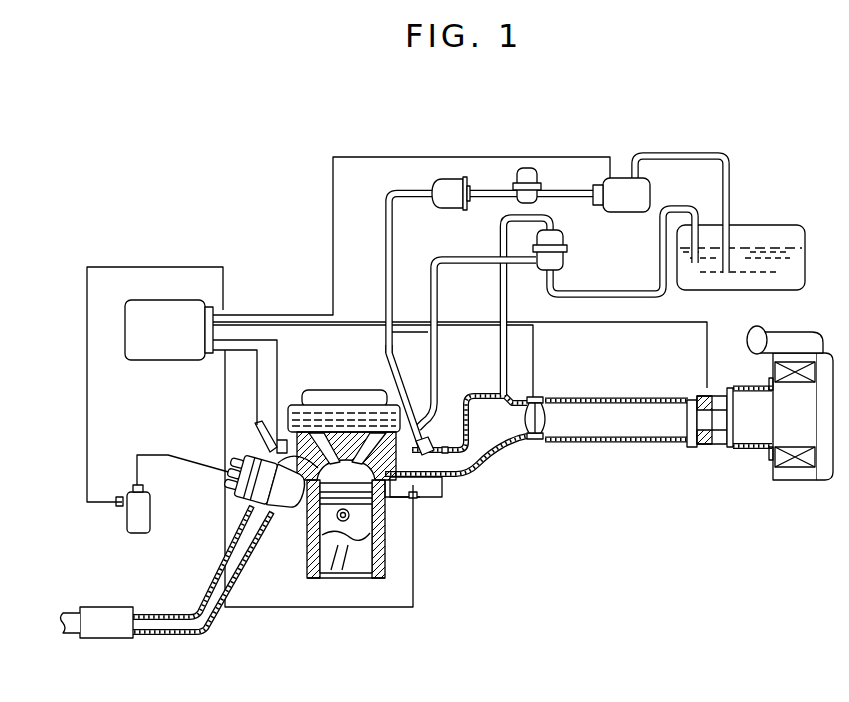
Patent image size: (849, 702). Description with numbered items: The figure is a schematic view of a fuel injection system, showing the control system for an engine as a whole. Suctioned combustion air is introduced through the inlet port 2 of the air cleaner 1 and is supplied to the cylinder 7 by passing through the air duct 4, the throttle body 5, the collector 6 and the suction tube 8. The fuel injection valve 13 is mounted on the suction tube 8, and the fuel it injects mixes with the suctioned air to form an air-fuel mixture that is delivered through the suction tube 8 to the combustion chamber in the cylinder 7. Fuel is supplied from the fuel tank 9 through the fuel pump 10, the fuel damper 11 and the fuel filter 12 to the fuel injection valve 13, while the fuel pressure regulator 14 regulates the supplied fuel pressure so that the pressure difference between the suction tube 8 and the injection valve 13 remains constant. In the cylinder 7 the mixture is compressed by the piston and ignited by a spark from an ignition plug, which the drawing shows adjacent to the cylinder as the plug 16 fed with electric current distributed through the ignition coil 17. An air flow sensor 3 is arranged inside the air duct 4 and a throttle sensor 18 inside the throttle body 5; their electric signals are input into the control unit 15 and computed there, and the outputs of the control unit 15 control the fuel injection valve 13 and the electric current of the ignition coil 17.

The air cleaner 1 is at (798, 482).
The inlet port 2 is at (760, 334).
The air flow sensor 3 is at (710, 448).
The air duct 4 is at (618, 443).
The throttle body 5 is at (538, 440).
The collector 6 is at (482, 430).
The cylinder 7 is at (348, 390).
The suction tube 8 is at (435, 489).
The fuel tank 9 is at (786, 225).
The fuel pump 10 is at (632, 178).
The fuel damper 11 is at (541, 176).
The fuel filter 12 is at (432, 185).
The fuel injection valve 13 is at (433, 430).
The fuel pressure regulator 14 is at (566, 259).
The control unit 15 is at (168, 282).
The spark plug 16 is at (232, 494).
The ignition coil 17 is at (122, 523).
The throttle sensor 18 is at (541, 397).